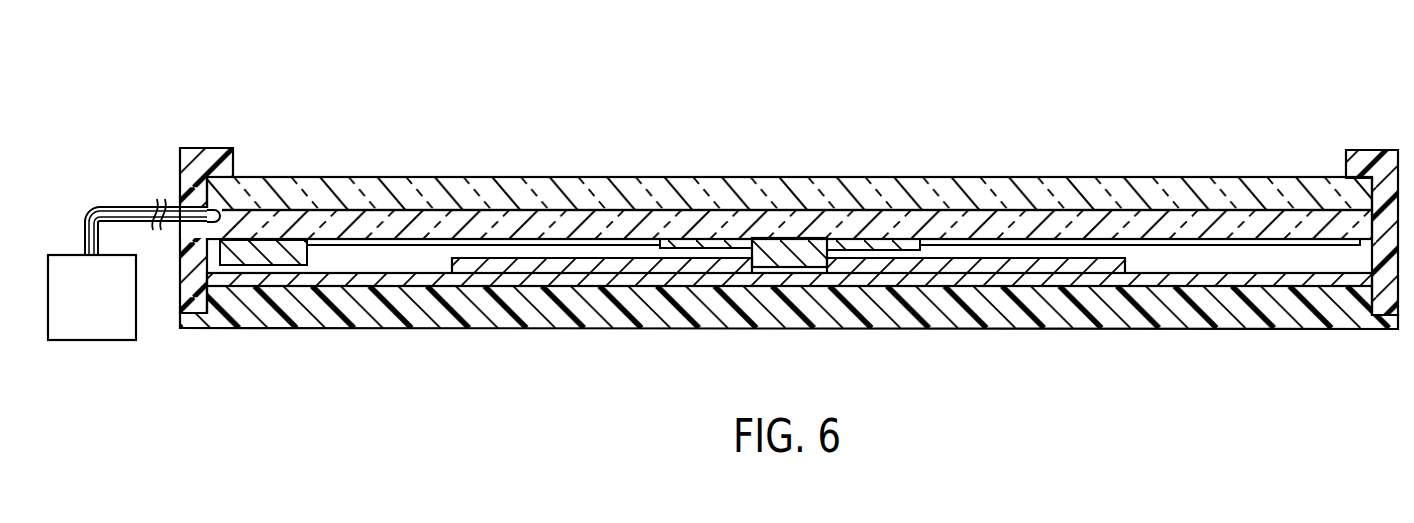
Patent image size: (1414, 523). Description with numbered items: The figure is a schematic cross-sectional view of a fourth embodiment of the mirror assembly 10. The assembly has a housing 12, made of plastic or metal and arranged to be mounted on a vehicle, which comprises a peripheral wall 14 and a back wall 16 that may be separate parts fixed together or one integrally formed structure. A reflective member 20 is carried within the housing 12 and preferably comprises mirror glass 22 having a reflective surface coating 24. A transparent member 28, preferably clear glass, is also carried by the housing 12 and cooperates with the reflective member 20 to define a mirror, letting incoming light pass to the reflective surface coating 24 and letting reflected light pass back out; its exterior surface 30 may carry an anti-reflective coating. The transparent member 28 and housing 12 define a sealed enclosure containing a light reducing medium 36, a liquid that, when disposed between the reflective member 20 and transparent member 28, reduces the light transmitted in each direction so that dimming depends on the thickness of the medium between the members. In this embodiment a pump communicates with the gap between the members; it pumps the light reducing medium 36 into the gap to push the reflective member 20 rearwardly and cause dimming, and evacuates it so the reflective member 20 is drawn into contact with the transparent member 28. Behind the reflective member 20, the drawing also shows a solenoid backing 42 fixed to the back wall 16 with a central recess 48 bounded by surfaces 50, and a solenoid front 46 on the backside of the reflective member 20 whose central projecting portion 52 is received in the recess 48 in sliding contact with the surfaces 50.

The mirror assembly 10 is at (234, 82).
The housing 12 is at (166, 156).
The peripheral wall 14 is at (188, 268).
The back wall 16 is at (468, 305).
The reflective member 20 is at (398, 217).
The mirror glass 22 is at (463, 210).
The reflective surface coating 24 is at (571, 211).
The transparent member 28 is at (322, 182).
The exterior surface 30 is at (857, 177).
The light reducing medium 36 is at (1290, 255).
The solenoid backing 42 is at (980, 267).
The solenoid front 46 is at (597, 237).
The central recess 48 is at (788, 275).
The surfaces 50 is at (752, 275).
The central projecting portion 52 is at (812, 257).